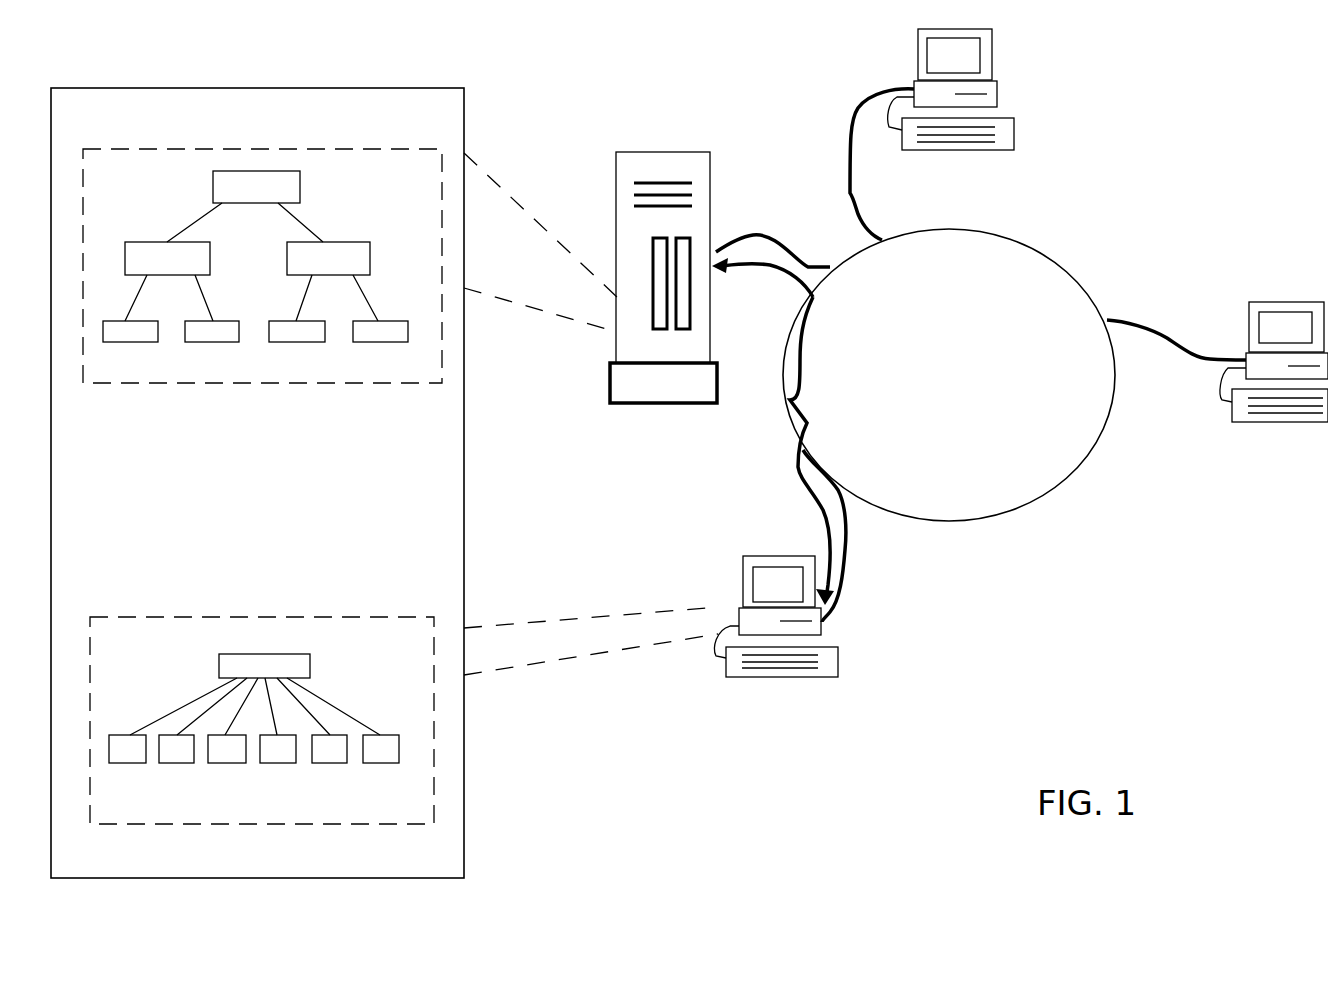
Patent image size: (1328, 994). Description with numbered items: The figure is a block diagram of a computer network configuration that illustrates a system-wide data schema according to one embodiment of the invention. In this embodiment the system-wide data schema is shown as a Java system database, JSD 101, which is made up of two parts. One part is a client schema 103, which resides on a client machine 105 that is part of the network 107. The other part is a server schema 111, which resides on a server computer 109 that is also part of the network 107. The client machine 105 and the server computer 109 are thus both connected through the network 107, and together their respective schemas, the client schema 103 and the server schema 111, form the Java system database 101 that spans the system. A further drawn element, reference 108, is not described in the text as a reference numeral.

The Java system database 101 is at (464, 547).
The client schema 103 is at (434, 767).
The client machine 105 is at (822, 625).
The network 107 is at (1043, 250).
The communication path 108 is at (802, 365).
The server computer 109 is at (710, 167).
The server schema 111 is at (422, 113).